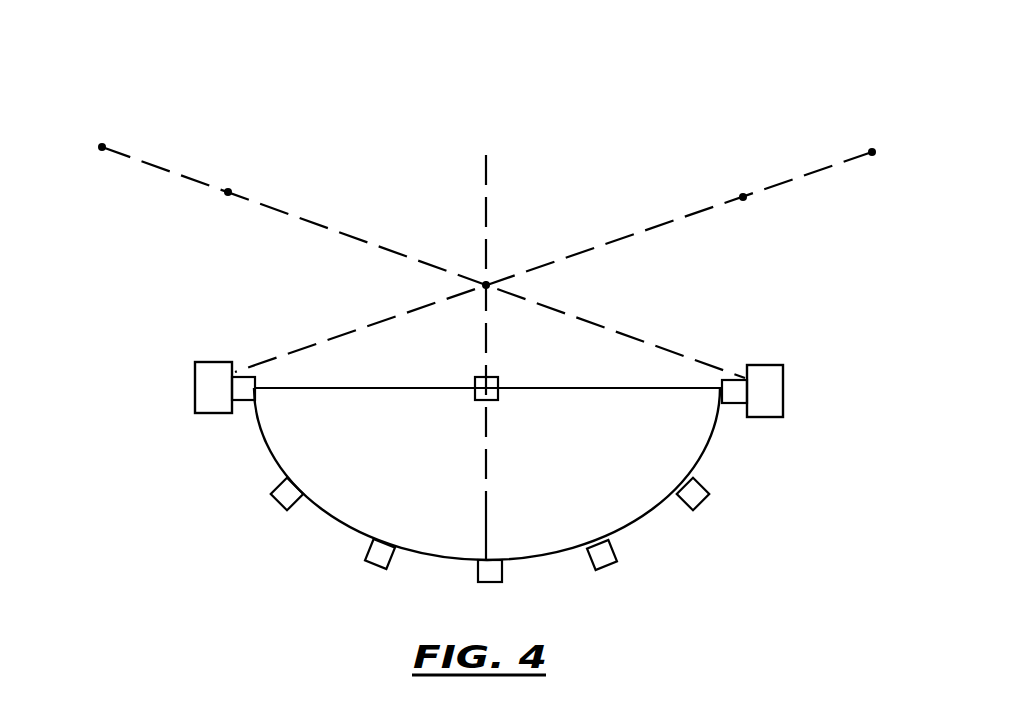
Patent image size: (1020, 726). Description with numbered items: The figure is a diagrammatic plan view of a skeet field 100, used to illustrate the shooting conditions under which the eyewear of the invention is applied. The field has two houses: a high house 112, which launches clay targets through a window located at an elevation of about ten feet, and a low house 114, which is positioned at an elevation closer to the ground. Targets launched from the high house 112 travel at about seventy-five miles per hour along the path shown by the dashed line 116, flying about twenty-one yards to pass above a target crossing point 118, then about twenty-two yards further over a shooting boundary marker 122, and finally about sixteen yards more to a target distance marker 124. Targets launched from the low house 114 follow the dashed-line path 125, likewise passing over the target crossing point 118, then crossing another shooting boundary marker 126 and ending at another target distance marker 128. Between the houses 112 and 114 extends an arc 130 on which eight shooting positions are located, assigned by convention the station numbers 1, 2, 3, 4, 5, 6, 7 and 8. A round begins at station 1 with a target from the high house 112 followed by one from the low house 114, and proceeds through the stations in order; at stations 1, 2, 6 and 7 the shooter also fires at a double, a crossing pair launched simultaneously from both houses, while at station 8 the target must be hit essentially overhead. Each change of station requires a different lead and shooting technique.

The skeet field 100 is at (690, 112).
The station 1 is at (245, 400).
The station 2 is at (277, 504).
The station 3 is at (372, 568).
The station 4 is at (502, 578).
The station 5 is at (608, 570).
The station 6 is at (702, 504).
The station 7 is at (735, 403).
The station 8 is at (498, 394).
The high house 112 is at (206, 413).
The low house 114 is at (783, 386).
The target path 116 is at (652, 228).
The target crossing point 118 is at (488, 288).
The shooting boundary marker 122 is at (744, 199).
The target distance marker 124 is at (872, 154).
The target path 125 is at (392, 252).
The shooting boundary marker 126 is at (228, 194).
The target distance marker 128 is at (102, 150).
The arc 130 is at (446, 558).